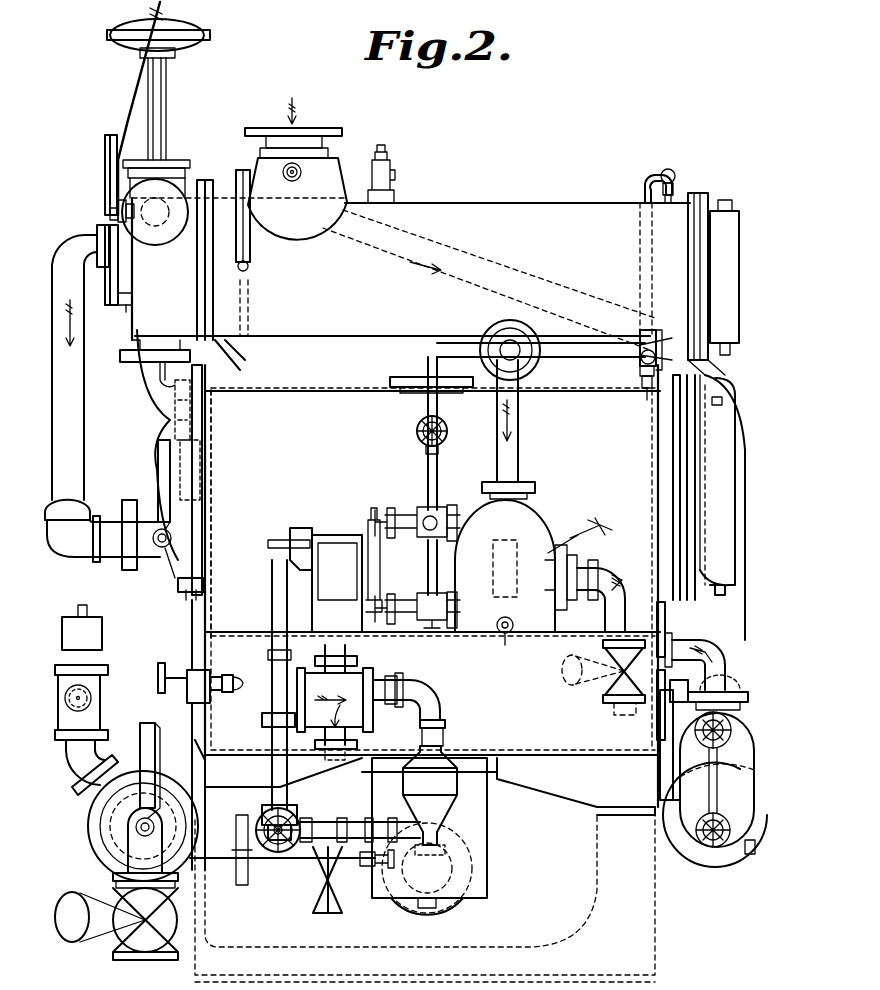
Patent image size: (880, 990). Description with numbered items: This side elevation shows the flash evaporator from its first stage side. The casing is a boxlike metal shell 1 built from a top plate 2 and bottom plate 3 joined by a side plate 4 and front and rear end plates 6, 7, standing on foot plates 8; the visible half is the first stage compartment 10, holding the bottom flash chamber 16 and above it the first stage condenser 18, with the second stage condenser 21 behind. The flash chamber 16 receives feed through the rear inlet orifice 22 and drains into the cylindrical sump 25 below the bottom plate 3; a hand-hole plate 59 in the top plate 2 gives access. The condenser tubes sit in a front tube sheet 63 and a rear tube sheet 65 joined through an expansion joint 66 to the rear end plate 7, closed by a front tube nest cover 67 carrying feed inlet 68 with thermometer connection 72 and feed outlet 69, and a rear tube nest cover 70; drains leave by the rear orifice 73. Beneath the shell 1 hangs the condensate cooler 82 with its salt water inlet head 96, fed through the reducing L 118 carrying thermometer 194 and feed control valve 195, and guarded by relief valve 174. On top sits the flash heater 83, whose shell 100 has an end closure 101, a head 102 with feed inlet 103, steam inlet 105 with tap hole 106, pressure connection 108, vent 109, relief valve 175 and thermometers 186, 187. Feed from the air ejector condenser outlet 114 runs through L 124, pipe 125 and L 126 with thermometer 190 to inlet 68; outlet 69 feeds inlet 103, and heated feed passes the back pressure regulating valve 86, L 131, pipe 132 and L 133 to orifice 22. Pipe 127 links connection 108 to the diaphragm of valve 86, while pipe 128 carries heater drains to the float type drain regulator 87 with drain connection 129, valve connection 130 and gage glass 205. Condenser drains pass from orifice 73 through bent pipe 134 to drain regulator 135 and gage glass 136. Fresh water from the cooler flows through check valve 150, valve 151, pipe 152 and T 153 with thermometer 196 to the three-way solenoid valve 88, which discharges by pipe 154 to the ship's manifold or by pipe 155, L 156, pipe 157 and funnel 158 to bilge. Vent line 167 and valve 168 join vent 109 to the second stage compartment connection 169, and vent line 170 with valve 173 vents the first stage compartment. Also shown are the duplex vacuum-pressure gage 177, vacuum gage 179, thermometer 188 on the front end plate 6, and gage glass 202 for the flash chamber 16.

The shell 1 is at (338, 404).
The top plate 2 is at (275, 402).
The bottom plate 3 is at (522, 756).
The side plate 4 is at (540, 404).
The end plate 6 is at (214, 448).
The end plate 7 is at (655, 470).
The foot plates 8 is at (200, 765).
The first stage compartment 10 is at (706, 490).
The first stage flash chamber 16 is at (585, 762).
The first stage condenser 18 is at (700, 520).
The second stage condenser 21 is at (395, 898).
The rear inlet orifice 22 is at (617, 738).
The drain well or sump 25 is at (487, 853).
The hand-hole plate 59 is at (420, 378).
The front tube sheet 63 is at (204, 552).
The rear tube sheet 65 is at (690, 470).
The expansion joint 66 is at (680, 440).
The front tube nest cover 67 is at (200, 420).
The feed inlet 68 is at (178, 586).
The feed outlet 69 is at (152, 410).
The rear tube nest cover 70 is at (724, 537).
The thermometer connection 72 is at (158, 528).
The rear orifice 73 is at (677, 701).
The condensate cooler 82 is at (105, 826).
The flash heater 83 is at (522, 210).
The back pressure regulating valve 86 is at (170, 175).
The float type drain regulator 87 is at (540, 540).
The three-way solenoid valve 88 is at (340, 548).
The salt water inlet head 96 is at (108, 838).
The cylindrical metal shell 100 is at (455, 200).
The end closure 101 is at (732, 262).
The head 102 is at (138, 342).
The feed inlet 103 is at (158, 372).
The steam inlet 105 is at (305, 130).
The tap hole 106 is at (302, 170).
The pressure connection 108 is at (130, 300).
The vent 109 is at (680, 200).
The feed outlet 114 is at (112, 212).
The reducing L 118 is at (125, 850).
The L 124 is at (80, 240).
The pipe 125 is at (52, 395).
The L 126 is at (70, 548).
The pipe 127 is at (130, 96).
The pipe 128 is at (514, 452).
The drain connection 129 is at (502, 646).
The valve connection 130 is at (615, 578).
The L 131 is at (118, 190).
The pipe 132 is at (728, 405).
The L 133 is at (735, 682).
The bent pipe 134 is at (722, 632).
The drain regulator 135 is at (690, 835).
The gage glass 136 is at (722, 760).
The check valve 150 is at (240, 850).
The valve 151 is at (300, 860).
The pipe 152 is at (300, 818).
The T 153 is at (275, 695).
The pipe 154 is at (370, 746).
The pipe 155 is at (395, 688).
The L 156 is at (432, 700).
The pipe 157 is at (445, 724).
The funnel 158 is at (445, 803).
The vent line 167 is at (645, 192).
The valve 168 is at (660, 330).
The second stage compartment connection 169 is at (646, 398).
The vent line 170 is at (466, 340).
The valve 173 is at (418, 440).
The relief valve 174 is at (185, 635).
The relief valve 175 is at (392, 168).
The duplex vacuum-pressure gage 177 is at (236, 312).
The vacuum gage 179 is at (242, 368).
The thermometer 186 is at (105, 150).
The thermometer 187 is at (250, 250).
The thermometer 188 is at (188, 600).
The thermometer 190 is at (158, 458).
The thermometer 194 is at (110, 750).
The feed control valve 195 is at (140, 925).
The thermometer 196 is at (278, 598).
The gage glass 202 is at (105, 798).
The gage glass 205 is at (437, 558).